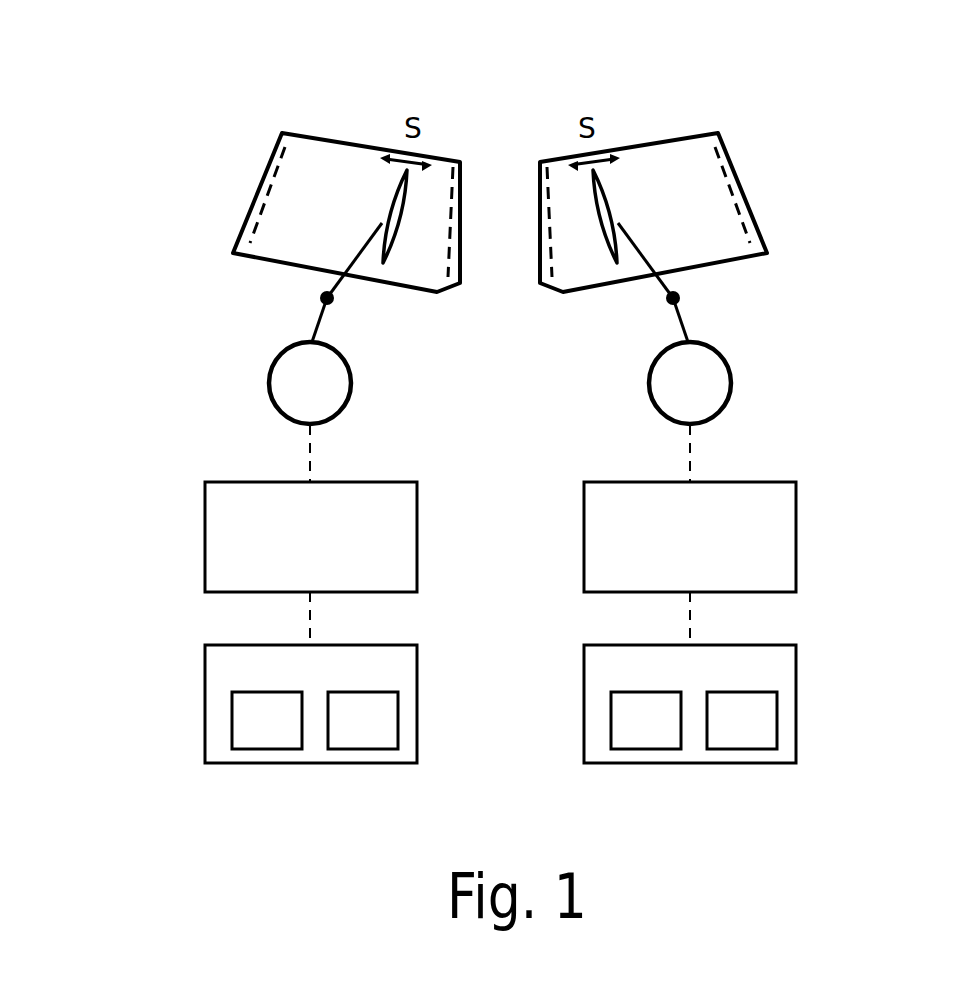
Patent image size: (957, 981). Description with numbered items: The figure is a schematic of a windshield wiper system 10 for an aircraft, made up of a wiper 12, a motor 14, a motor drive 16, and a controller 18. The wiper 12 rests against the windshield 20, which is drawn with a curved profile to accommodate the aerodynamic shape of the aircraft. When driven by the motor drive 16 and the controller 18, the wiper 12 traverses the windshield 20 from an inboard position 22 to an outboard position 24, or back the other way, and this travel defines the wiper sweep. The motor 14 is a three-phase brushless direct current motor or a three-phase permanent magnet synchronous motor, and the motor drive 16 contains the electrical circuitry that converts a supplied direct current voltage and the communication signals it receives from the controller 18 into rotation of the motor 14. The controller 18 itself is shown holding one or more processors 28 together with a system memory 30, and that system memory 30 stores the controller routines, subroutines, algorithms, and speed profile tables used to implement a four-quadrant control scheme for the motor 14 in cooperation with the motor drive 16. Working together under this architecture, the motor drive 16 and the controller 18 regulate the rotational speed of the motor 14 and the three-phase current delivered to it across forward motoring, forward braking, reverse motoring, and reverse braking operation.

The windshield wiper system 10 is at (894, 115).
The wiper 12 is at (387, 203).
The motor 14 is at (268, 378).
The motor drive 16 is at (205, 527).
The controller 18 is at (205, 696).
The windshield 20 is at (302, 137).
The inboard position 22 is at (500, 122).
The outboard position 24 is at (272, 180).
The processors 28 is at (251, 733).
The system memory 30 is at (347, 733).